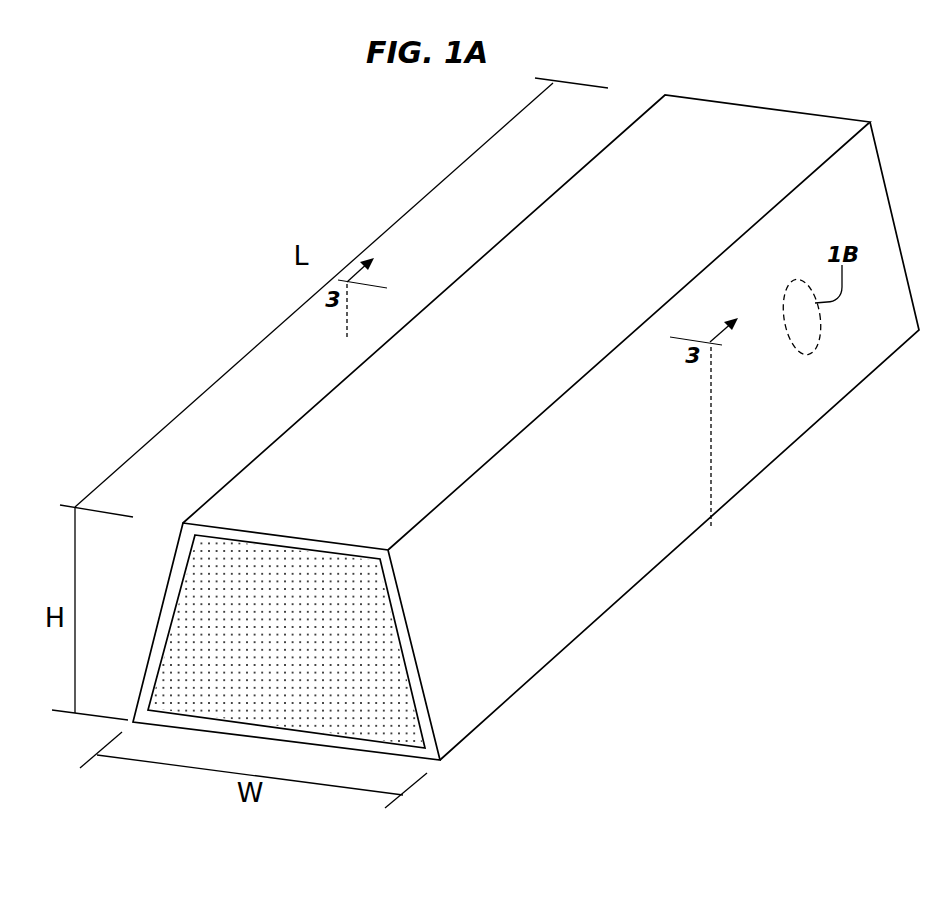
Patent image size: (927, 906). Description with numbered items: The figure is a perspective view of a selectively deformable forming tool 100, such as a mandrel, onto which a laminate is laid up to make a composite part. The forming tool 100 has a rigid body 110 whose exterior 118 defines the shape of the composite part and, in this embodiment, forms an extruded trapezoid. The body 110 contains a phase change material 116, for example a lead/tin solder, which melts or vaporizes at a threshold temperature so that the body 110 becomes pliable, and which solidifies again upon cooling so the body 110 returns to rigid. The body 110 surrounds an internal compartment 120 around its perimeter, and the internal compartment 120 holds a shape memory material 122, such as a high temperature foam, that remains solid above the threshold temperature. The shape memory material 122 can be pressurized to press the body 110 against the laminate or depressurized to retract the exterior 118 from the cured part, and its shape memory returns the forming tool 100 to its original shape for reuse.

The selectively deformable forming tool 100 is at (513, 427).
The rigid body 110 is at (526, 427).
The phase change material 116 is at (796, 298).
The exterior 118 is at (655, 519).
The internal compartment 120 is at (297, 642).
The shape memory material 122 is at (386, 678).